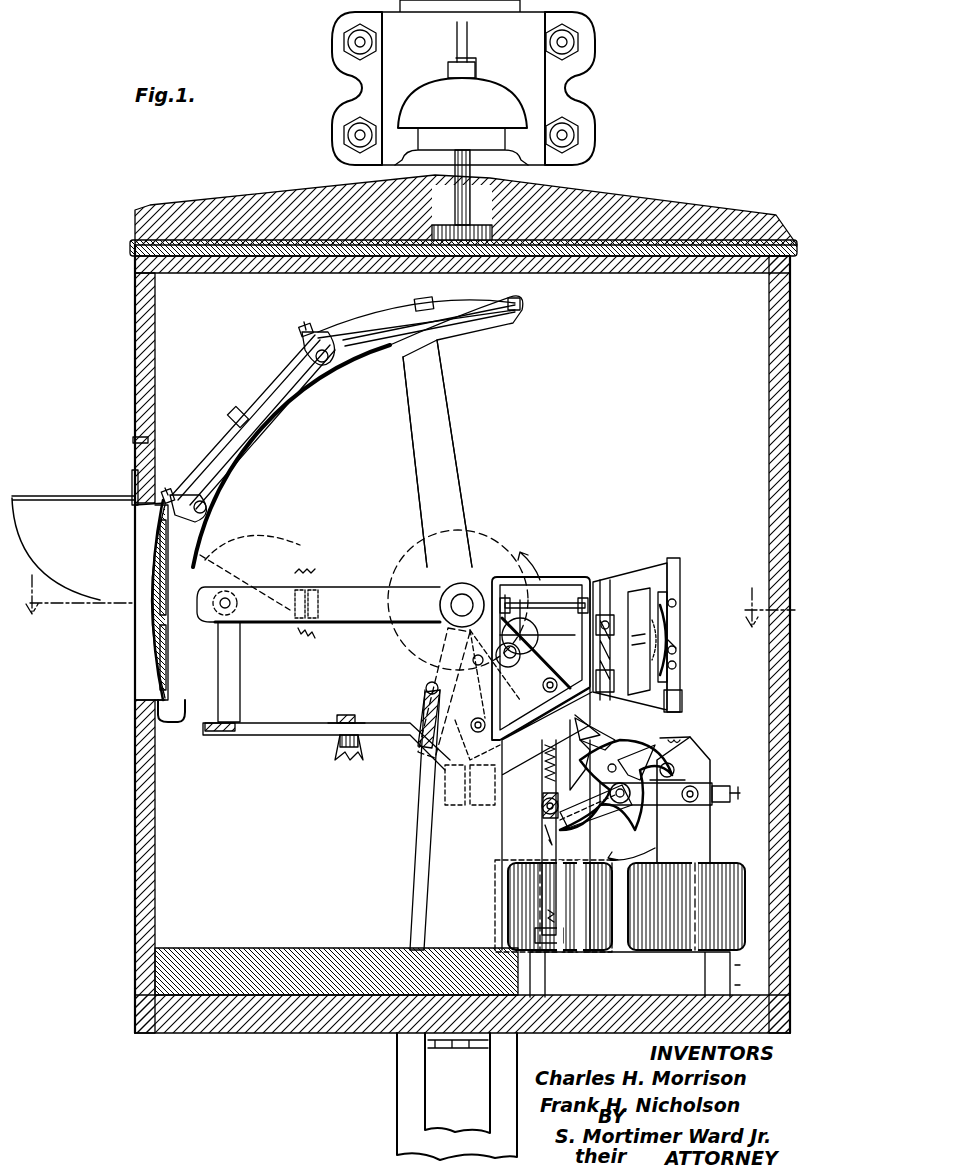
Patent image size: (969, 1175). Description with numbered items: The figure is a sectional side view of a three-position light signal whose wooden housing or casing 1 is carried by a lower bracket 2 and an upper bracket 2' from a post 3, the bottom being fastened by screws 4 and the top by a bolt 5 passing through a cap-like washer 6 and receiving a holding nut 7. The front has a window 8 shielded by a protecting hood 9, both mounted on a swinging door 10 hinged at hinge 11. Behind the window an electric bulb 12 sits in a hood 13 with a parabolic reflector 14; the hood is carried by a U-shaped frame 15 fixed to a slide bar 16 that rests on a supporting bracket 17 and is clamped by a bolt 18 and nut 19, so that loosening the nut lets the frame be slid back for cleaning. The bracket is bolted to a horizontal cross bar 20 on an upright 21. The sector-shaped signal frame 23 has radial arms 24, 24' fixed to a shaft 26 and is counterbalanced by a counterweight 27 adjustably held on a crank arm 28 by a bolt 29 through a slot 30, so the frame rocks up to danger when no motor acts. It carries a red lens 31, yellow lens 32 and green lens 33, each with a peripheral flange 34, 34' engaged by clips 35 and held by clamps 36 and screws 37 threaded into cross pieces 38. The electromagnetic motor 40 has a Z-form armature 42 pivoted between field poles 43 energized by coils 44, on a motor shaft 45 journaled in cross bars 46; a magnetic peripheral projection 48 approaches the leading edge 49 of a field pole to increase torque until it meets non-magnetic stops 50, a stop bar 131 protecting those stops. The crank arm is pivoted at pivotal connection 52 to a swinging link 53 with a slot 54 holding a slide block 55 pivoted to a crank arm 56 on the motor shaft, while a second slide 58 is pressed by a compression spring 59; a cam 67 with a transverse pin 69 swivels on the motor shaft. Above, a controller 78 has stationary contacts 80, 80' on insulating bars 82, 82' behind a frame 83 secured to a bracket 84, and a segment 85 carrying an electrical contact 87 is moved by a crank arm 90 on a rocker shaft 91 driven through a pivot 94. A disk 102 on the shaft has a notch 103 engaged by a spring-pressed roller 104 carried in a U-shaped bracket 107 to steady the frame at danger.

The housing or casing 1 is at (463, 604).
The lower bracket 2 is at (573, 899).
The upper bracket 2' is at (482, 82).
The post 3 is at (415, 178).
The screws 4 is at (462, 1050).
The bolt 5 is at (480, 205).
The cap-like washer 6 is at (412, 107).
The holding nut 7 is at (470, 72).
The window or light opening 8 is at (140, 700).
The protecting hood 9 is at (55, 497).
The swinging door 10 is at (145, 470).
The hinge 11 is at (133, 440).
The electric bulb 12 is at (298, 570).
The hood 13 is at (255, 558).
The parabolic reflector 14 is at (235, 540).
The U-shaped frame 15 is at (220, 725).
The slide bar 16 is at (285, 725).
The supporting bracket 17 is at (300, 735).
The bolt 18 is at (340, 722).
The nut 19 is at (355, 752).
The horizontal cross bar 20 is at (445, 785).
The upright 21 is at (410, 852).
The signal frame 23 is at (282, 395).
The radial arm 24 is at (318, 586).
The radial arm 24' is at (459, 453).
The shaft 26 is at (470, 598).
The counterweight 27 is at (478, 655).
The crank arm 28 is at (545, 672).
The bolt 29 is at (498, 658).
The slot 30 is at (525, 655).
The red lens 31 is at (162, 610).
The yellow lens 32 is at (225, 410).
The green lens 33 is at (382, 312).
The peripheral flange 34 is at (131, 600).
The peripheral flange 34' is at (342, 390).
The clips 35 is at (240, 408).
The clamps or washers 36 is at (302, 332).
The screws 37 is at (308, 325).
The cross pieces 38 is at (328, 345).
The electromagnetic motor 40 is at (655, 855).
The armature 42 is at (605, 745).
The field poles 43 is at (705, 760).
The coils 44 is at (520, 912).
The motor shaft 45 is at (612, 805).
The cross bars 46 is at (665, 805).
The peripheral projection 48 is at (578, 740).
The leading edge of field pole 49 is at (672, 750).
The stops 50 is at (672, 740).
The pivotal connection 52 is at (548, 688).
The swinging link 53 is at (560, 725).
The slot 54 is at (546, 845).
The slide block 55 is at (540, 800).
The crank arm 56 is at (575, 805).
The second slide 58 is at (545, 795).
The compression spring 59 is at (558, 740).
The cam 67 is at (628, 782).
The transverse pin 69 is at (620, 770).
The controller or switch mechanism 78 is at (680, 605).
The stationary contact 80 is at (702, 628).
The stationary contact 80' is at (700, 654).
The insulating bar 82 is at (696, 622).
The insulating bar 82' is at (692, 692).
The frame 83 is at (660, 575).
The bracket 84 is at (560, 577).
The segment 85 is at (672, 628).
The electrical contact 87 is at (672, 635).
The crank arm 90 is at (635, 640).
The rocker shaft 91 is at (612, 640).
The pivot 94 is at (630, 580).
The disk 102 is at (412, 635).
The notch 103 is at (428, 682).
The spring-pressed roller 104 is at (428, 695).
The U-shaped bracket 107 is at (465, 735).
The stop bar 131 is at (700, 735).